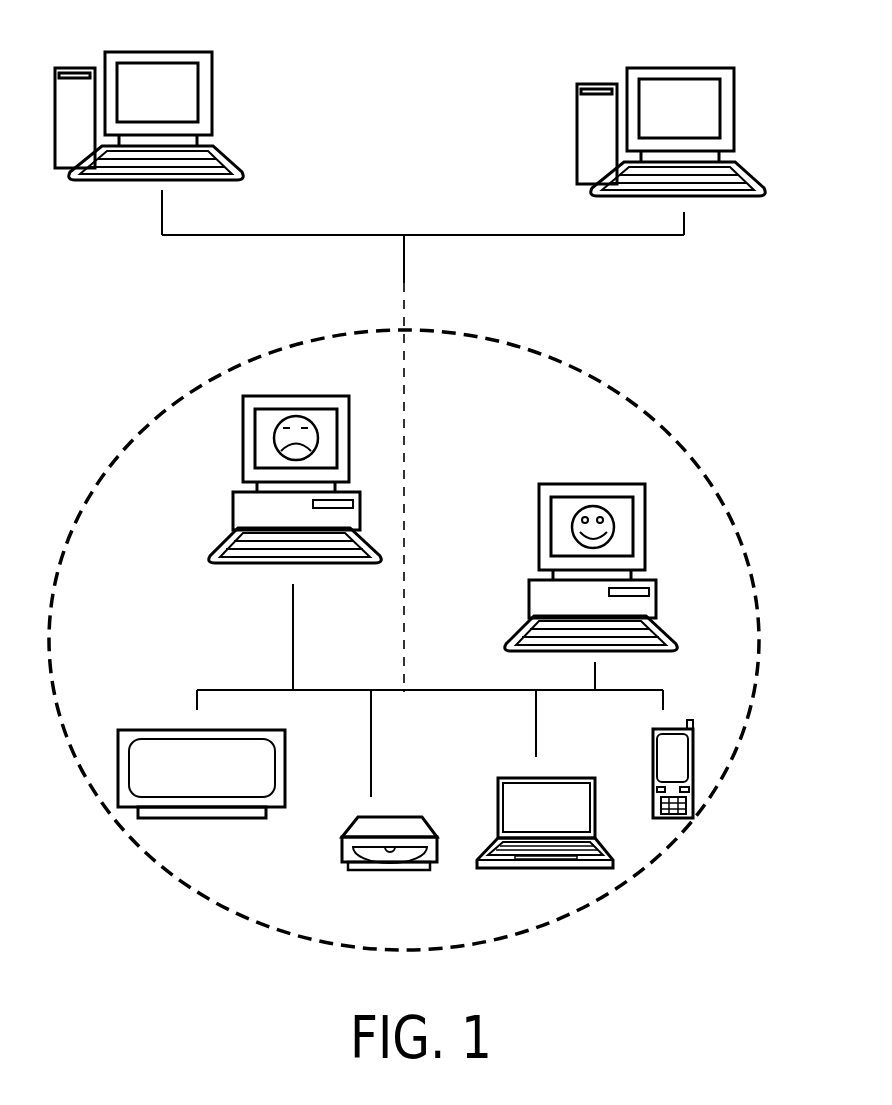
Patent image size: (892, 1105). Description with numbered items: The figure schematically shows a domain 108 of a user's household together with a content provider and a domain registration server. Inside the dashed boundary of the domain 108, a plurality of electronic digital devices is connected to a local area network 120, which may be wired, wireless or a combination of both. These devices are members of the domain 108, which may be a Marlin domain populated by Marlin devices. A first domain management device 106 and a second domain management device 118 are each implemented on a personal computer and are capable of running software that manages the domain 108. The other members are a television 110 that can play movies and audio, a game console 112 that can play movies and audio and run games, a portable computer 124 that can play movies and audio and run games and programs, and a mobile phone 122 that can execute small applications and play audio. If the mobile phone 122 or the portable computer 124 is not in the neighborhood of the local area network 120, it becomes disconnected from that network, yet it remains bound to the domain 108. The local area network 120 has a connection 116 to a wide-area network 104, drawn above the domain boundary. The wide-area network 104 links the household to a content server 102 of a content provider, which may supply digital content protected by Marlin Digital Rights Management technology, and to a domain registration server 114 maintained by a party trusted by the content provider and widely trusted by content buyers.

The content server 102 is at (102, 87).
The wide-area network 104 is at (157, 228).
The first domain management device 106 is at (250, 463).
The domain 108 is at (143, 448).
The television 110 is at (265, 765).
The game console 112 is at (343, 841).
The domain registration server 114 is at (624, 105).
The connection 116 is at (405, 398).
The second domain management device 118 is at (640, 547).
The local area network 120 is at (663, 690).
The mobile phone 122 is at (675, 759).
The portable computer 124 is at (513, 795).